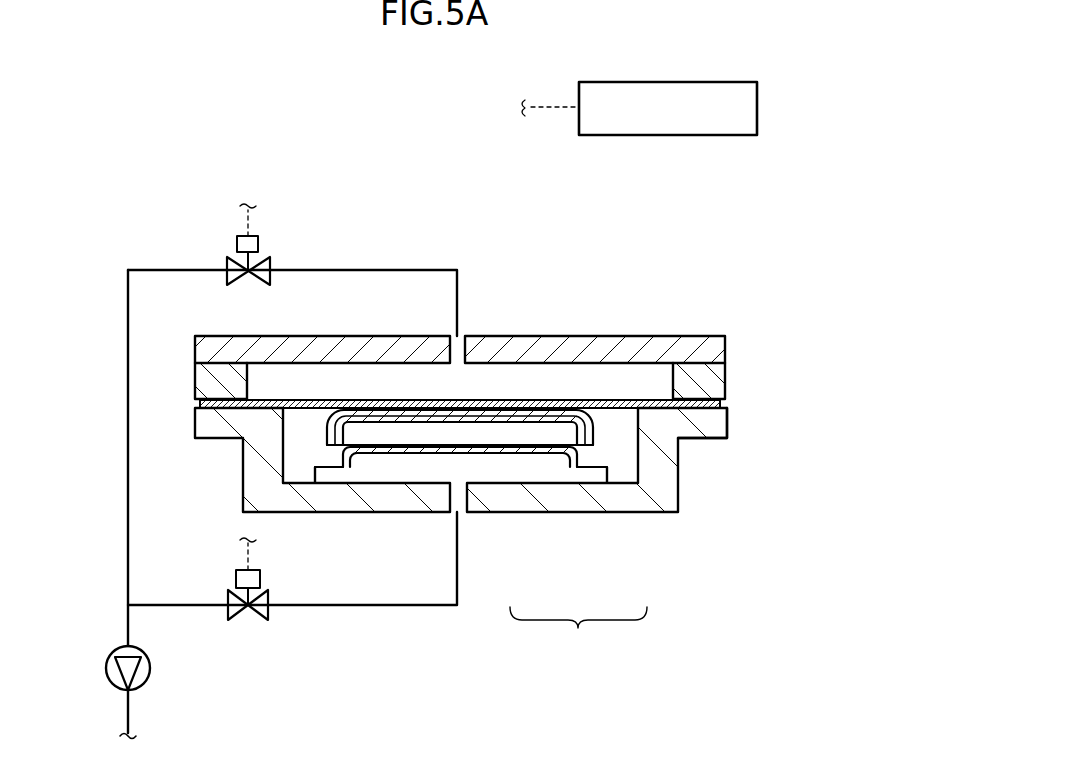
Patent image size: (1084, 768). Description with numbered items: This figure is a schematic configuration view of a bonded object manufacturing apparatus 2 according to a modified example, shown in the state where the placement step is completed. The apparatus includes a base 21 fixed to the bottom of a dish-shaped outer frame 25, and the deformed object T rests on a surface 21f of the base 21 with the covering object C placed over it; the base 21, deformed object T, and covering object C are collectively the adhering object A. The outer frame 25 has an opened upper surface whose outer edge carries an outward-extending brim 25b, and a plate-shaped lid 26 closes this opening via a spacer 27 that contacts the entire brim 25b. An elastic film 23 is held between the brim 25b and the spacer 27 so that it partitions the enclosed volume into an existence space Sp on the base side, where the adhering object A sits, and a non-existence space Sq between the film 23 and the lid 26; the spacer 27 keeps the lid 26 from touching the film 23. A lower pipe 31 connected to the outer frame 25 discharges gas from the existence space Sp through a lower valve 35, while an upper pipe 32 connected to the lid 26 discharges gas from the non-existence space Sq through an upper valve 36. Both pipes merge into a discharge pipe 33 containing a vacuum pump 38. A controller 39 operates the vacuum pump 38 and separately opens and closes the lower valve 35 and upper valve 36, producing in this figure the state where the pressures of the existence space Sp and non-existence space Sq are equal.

The bonded object manufacturing apparatus 2 is at (183, 172).
The base 21 is at (613, 452).
The surface 21f is at (466, 432).
The film 23 is at (595, 393).
The outer frame 25 is at (640, 516).
The brim 25b is at (702, 440).
The lid 26 is at (650, 335).
The spacer 27 is at (727, 382).
The lower pipe 31 is at (385, 610).
The upper pipe 32 is at (342, 268).
The discharge pipe 33 is at (127, 622).
The lower valve 35 is at (252, 621).
The upper valve 36 is at (268, 257).
The vacuum pump 38 is at (152, 676).
The controller 39 is at (710, 135).
The non-existence space Sq is at (292, 378).
The existence space Sp is at (303, 442).
The deformed object T is at (550, 435).
The covering object C is at (600, 432).
The adhering object A is at (578, 638).